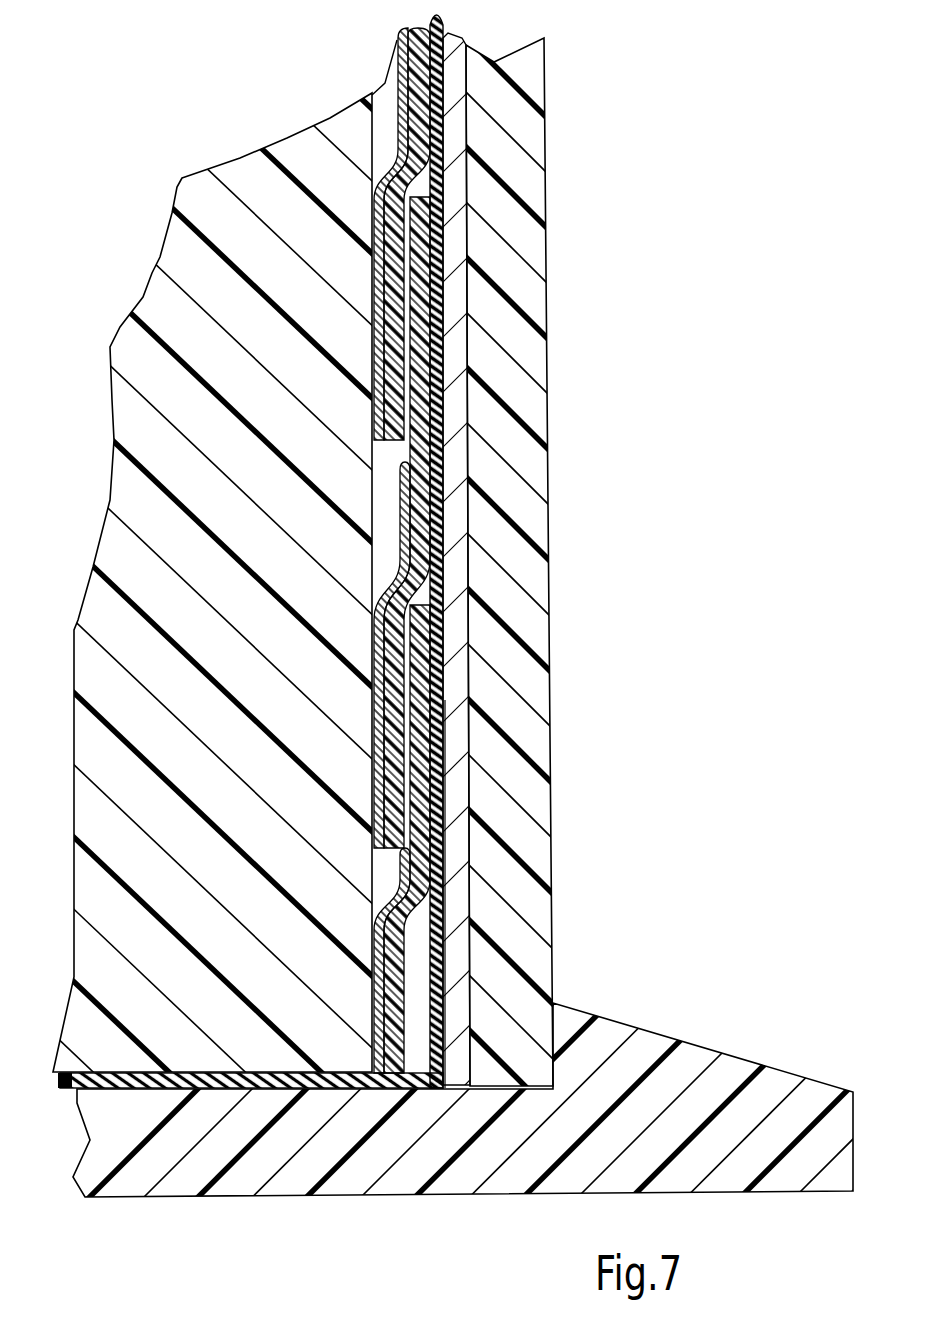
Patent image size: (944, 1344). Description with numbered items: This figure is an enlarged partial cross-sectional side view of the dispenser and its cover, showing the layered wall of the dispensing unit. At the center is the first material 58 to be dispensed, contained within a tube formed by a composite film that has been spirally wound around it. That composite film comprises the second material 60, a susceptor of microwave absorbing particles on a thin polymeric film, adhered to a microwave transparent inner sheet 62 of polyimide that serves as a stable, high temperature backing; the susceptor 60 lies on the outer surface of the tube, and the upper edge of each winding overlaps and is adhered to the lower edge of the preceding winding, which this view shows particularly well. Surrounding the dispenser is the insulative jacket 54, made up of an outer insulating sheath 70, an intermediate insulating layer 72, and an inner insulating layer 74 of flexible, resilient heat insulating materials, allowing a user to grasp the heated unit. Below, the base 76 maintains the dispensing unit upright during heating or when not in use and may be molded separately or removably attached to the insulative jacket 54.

The insulative jacket 54 is at (600, 667).
The first material 58 is at (132, 560).
The second material 60 is at (422, 515).
The inner sheet 62 is at (432, 563).
The outer insulating sheath 70 is at (530, 797).
The intermediate insulating layer 72 is at (455, 883).
The inner insulating layer 74 is at (445, 960).
The base 76 is at (375, 1162).